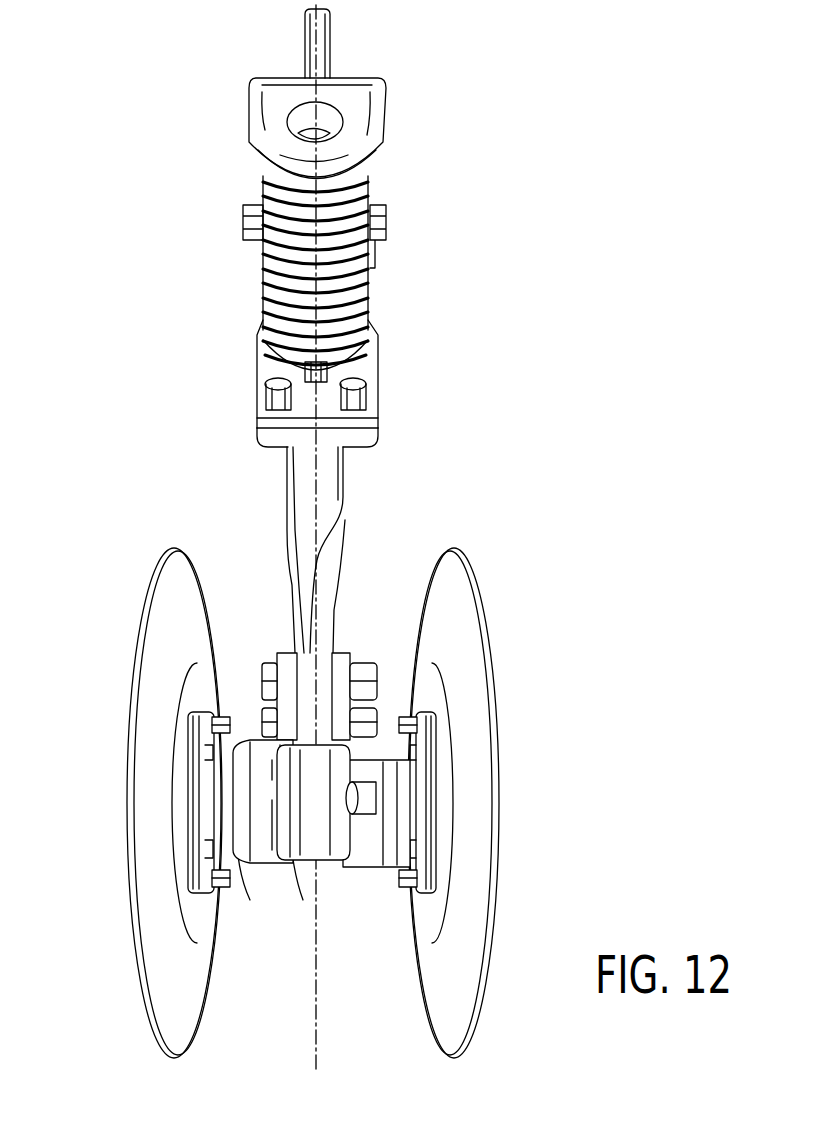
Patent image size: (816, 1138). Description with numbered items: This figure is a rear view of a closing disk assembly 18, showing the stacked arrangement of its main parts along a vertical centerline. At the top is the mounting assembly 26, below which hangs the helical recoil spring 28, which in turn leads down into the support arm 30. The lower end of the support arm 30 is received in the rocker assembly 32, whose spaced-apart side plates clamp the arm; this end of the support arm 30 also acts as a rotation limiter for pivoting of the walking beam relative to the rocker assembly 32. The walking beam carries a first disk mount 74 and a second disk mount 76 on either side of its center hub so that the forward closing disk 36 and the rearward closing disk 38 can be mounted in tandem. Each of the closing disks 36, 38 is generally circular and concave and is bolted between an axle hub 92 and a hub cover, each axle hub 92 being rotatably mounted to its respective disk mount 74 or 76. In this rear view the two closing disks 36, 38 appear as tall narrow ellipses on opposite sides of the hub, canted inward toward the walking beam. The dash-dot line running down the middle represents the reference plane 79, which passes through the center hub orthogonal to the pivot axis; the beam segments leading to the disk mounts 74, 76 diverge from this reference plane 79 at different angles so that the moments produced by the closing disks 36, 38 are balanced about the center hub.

The closing disk assembly 18 is at (573, 294).
The mounting assembly 26 is at (391, 278).
The helical recoil spring 28 is at (300, 300).
The support arm 30 is at (330, 566).
The rocker assembly 32 is at (276, 640).
The forward closing disk 36 is at (477, 773).
The rearward closing disk 38 is at (145, 777).
The first disk mount 74 is at (324, 802).
The second disk mount 76 is at (298, 875).
The reference plane 79 is at (316, 1052).
The axle hub 92 is at (400, 792).